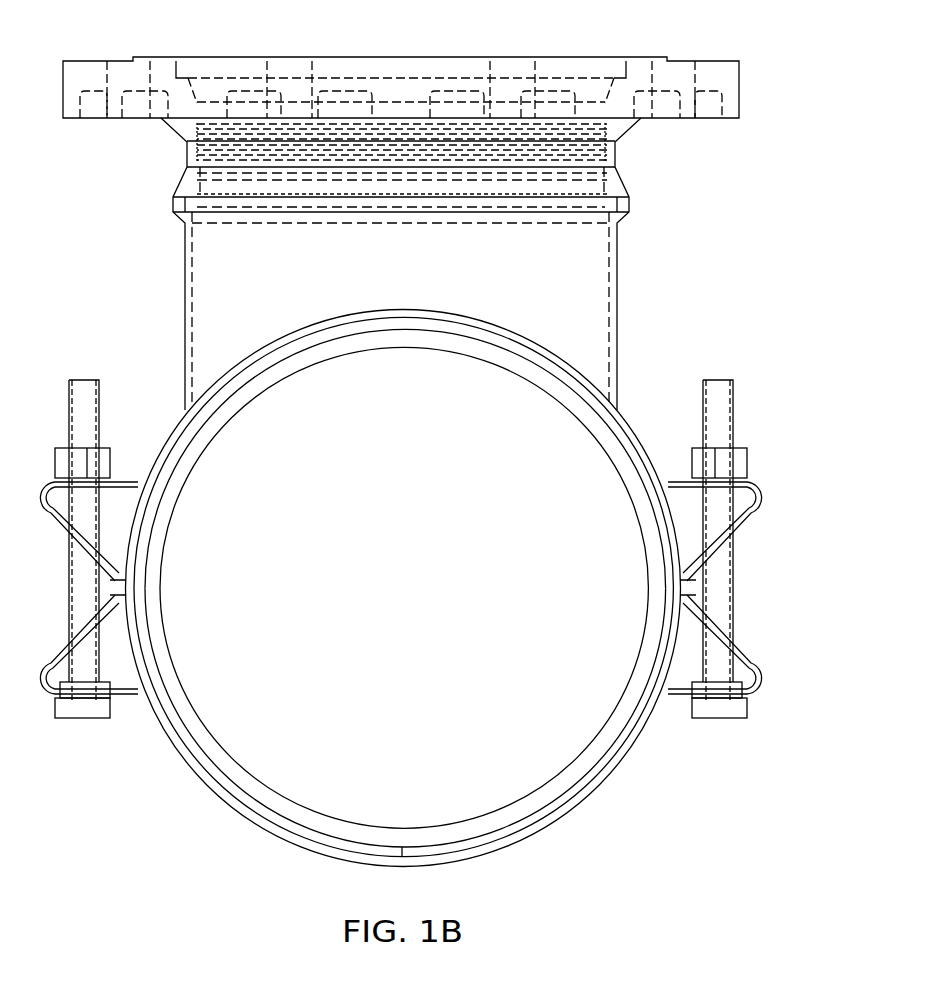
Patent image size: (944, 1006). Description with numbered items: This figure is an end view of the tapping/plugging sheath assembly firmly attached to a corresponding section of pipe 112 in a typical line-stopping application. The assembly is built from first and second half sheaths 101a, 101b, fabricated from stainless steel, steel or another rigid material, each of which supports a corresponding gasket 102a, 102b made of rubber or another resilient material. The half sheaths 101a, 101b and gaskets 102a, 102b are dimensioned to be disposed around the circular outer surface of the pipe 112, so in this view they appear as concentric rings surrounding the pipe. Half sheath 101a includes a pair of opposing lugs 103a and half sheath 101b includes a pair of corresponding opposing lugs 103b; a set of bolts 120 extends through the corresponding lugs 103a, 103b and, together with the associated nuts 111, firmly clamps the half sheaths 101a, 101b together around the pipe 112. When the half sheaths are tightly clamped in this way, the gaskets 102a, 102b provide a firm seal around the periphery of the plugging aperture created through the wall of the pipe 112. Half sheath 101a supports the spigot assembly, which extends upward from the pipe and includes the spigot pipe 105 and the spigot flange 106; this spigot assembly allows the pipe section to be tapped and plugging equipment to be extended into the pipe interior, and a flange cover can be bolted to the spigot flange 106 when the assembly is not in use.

The spigot flange 106 is at (702, 58).
The spigot pipe 105 is at (184, 286).
The first half sheath 101a is at (650, 452).
The second half sheath 101b is at (537, 832).
The gasket 102a is at (165, 458).
The gasket 102b is at (586, 776).
The section of pipe 112 is at (236, 777).
The lugs 103a is at (44, 506).
The lugs 103b is at (46, 675).
The nuts 111 is at (55, 465).
The bolts 120 is at (55, 712).